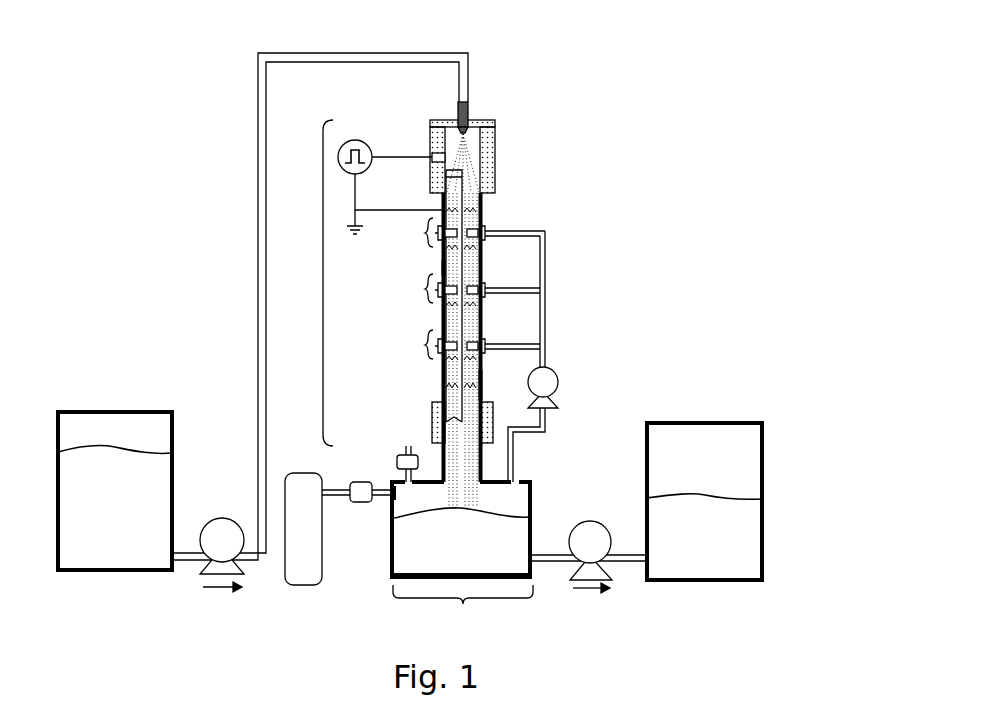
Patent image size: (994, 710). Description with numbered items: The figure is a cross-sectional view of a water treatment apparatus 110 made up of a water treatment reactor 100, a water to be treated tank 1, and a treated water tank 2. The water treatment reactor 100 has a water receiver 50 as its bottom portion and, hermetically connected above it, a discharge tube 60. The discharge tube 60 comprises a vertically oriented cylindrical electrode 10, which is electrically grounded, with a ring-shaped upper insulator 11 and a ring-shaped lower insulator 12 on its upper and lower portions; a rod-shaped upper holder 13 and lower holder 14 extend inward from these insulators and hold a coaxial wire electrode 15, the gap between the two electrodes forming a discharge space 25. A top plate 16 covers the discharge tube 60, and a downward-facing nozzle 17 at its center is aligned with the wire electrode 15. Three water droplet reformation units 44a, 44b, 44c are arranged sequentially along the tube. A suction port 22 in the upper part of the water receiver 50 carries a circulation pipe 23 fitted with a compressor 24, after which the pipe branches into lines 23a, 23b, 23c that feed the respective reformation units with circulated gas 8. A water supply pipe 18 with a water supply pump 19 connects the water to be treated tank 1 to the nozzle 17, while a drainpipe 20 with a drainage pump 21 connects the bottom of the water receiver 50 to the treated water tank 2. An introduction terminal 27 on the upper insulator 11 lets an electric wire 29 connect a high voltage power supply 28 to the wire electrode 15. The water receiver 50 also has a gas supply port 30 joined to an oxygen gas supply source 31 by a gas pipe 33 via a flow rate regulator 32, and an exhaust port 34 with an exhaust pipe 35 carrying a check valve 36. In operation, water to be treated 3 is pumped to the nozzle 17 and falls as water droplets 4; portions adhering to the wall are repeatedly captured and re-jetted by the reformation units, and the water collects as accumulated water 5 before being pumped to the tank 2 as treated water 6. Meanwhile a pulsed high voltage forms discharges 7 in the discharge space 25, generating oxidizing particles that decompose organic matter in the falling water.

The water to be treated tank 1 is at (97, 410).
The treated water tank 2 is at (690, 422).
The water to be treated 3 is at (158, 467).
The water droplets 4 is at (458, 136).
The accumulated water 5 is at (412, 537).
The treated water 6 is at (740, 547).
The discharges 7 is at (445, 247).
The circulated gas 8 is at (548, 355).
The cylindrical electrode 10 is at (443, 318).
The upper insulator 11 is at (496, 145).
The lower insulator 12 is at (435, 430).
The upper holder 13 is at (462, 171).
The lower holder 14 is at (452, 420).
The wire electrode 15 is at (483, 386).
The top plate 16 is at (496, 124).
The nozzle 17 is at (470, 107).
The water supply pipe 18 is at (260, 292).
The water supply pump 19 is at (223, 517).
The drainpipe 20 is at (619, 553).
The drainage pump 21 is at (592, 520).
The suction port 22 is at (530, 492).
The circulation pipe 23 is at (513, 455).
The branched circulation pipe 23a is at (518, 231).
The branched circulation pipe 23b is at (514, 288).
The branched circulation pipe 23c is at (514, 343).
The compressor 24 is at (558, 383).
The discharge space 25 is at (442, 268).
The introduction terminal 27 is at (433, 158).
The high voltage power supply 28 is at (355, 140).
The electric wire 29 is at (383, 157).
The gas supply port 30 is at (392, 499).
The oxygen gas supply source 31 is at (297, 472).
The flow rate regulator 32 is at (361, 482).
The gas pipe 33 is at (336, 489).
The exhaust port 34 is at (413, 480).
The exhaust pipe 35 is at (408, 453).
The check valve 36 is at (402, 452).
The water droplet reformation unit 44a is at (440, 232).
The water droplet reformation unit 44b is at (440, 288).
The water droplet reformation unit 44c is at (440, 344).
The water receiver 50 is at (392, 563).
The discharge tube 60 is at (322, 291).
The water treatment reactor 100 is at (479, 634).
The water treatment apparatus 110 is at (456, 30).